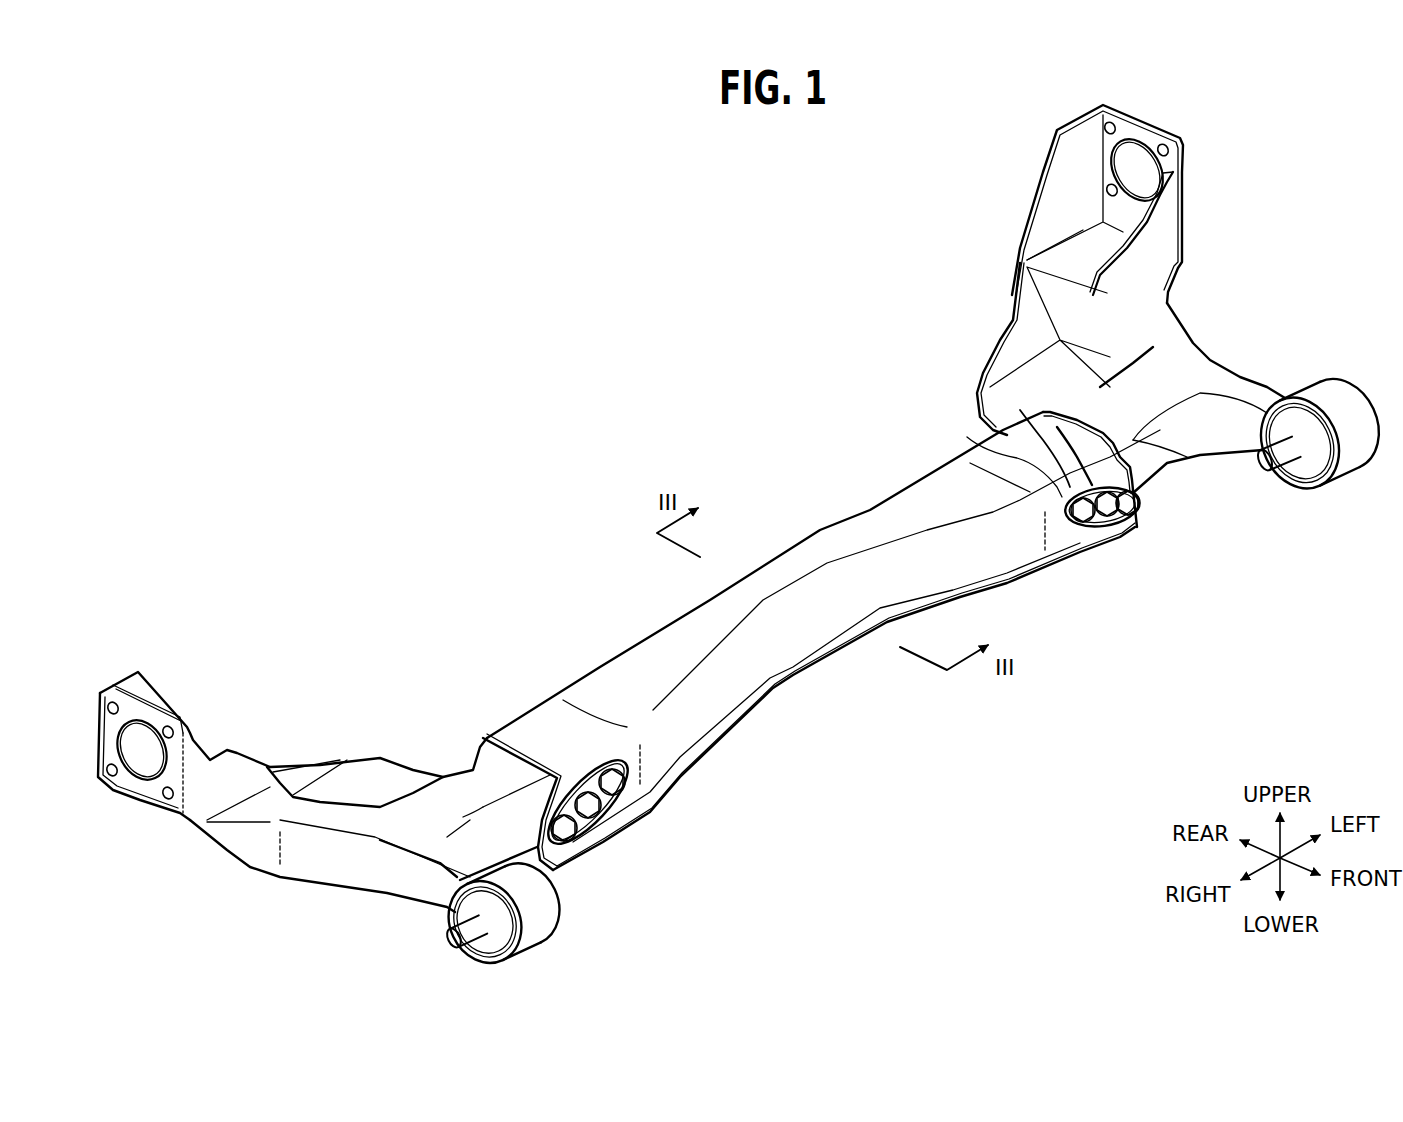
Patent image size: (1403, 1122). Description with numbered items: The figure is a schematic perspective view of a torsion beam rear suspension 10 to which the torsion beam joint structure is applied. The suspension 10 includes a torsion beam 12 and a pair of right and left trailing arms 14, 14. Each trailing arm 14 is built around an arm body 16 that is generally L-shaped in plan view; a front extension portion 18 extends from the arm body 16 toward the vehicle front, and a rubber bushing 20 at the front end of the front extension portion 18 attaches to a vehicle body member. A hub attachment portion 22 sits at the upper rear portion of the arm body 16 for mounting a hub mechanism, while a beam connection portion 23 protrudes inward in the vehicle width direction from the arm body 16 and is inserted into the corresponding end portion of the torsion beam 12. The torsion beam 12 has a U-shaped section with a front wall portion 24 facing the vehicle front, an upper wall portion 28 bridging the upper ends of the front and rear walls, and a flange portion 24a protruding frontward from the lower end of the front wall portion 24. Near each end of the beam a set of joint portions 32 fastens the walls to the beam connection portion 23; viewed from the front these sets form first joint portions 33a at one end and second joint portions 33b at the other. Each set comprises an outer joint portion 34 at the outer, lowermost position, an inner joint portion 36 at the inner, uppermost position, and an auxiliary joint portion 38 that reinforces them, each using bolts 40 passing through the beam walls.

The torsion beam rear suspension 10 is at (648, 290).
The torsion beam 12 is at (770, 528).
The trailing arm 14 is at (315, 908).
The arm body 16 is at (403, 823).
The front extension portion 18 is at (468, 860).
The rubber bushing 20 is at (500, 930).
The hub attachment portion 22 is at (1172, 118).
The beam connection portion 23 is at (525, 767).
The front wall portion 24 is at (762, 647).
The flange portion 24a is at (752, 712).
The upper wall portion 28 is at (808, 545).
The joint portions 32 is at (604, 838).
The first joint portions 33a is at (598, 870).
The second joint portions 33b is at (1100, 561).
The outer joint portion 34 is at (560, 760).
The inner joint portion 36 is at (590, 770).
The auxiliary joint portion 38 is at (575, 760).
The bolt 40 is at (660, 805).